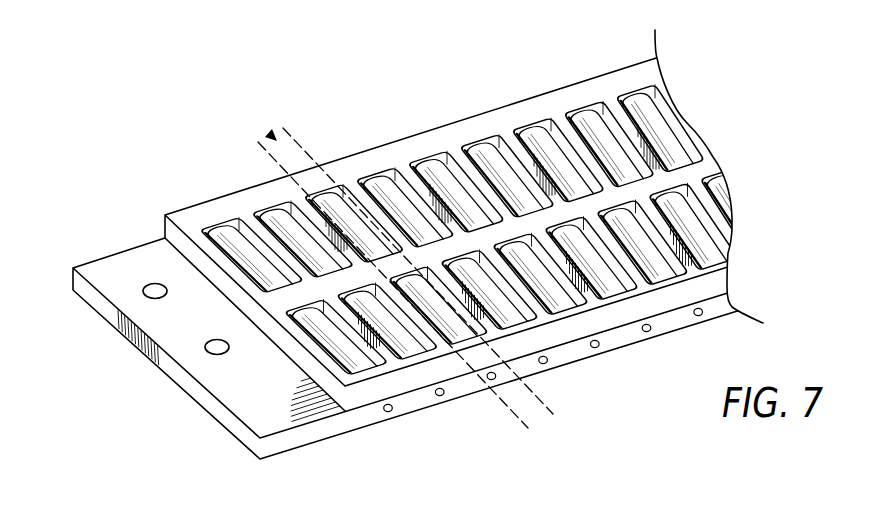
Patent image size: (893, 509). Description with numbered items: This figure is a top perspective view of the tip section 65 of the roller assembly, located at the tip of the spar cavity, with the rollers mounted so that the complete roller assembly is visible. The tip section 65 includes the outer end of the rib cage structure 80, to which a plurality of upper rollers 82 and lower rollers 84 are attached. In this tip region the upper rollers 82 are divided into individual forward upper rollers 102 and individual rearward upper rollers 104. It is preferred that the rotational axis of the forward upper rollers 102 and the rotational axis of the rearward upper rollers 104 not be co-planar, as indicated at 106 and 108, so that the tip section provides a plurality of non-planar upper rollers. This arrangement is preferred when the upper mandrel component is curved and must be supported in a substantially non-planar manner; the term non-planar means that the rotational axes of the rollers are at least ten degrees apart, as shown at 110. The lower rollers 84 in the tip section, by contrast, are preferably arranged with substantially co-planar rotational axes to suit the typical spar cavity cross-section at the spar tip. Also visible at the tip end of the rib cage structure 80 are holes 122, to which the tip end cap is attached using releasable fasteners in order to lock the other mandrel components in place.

The tip section 65 is at (100, 153).
The rib cage structure 80 is at (402, 152).
The upper rollers 82 is at (226, 237).
The lower rollers 84 is at (403, 354).
The forward upper rollers 102 is at (273, 356).
The rearward upper rollers 104 is at (205, 295).
The rotational axis of forward upper rollers 106 is at (288, 139).
The rotational axis of rearward upper rollers 108 is at (270, 153).
The angle between rotational axes 110 is at (272, 135).
The holes 122 is at (148, 283).